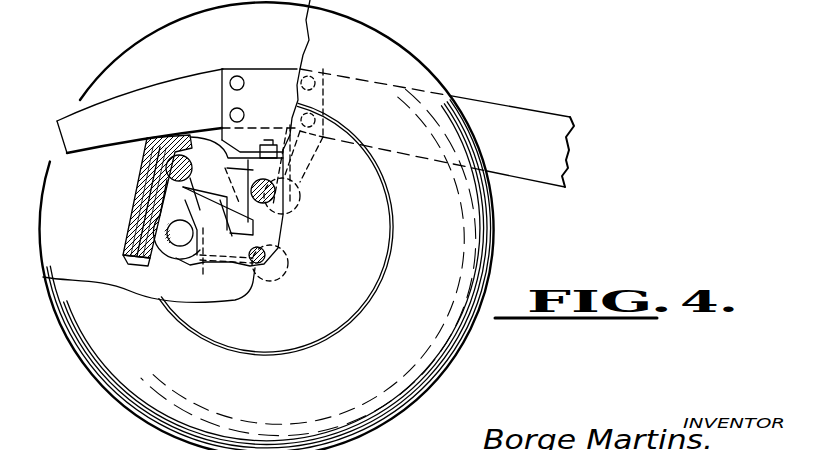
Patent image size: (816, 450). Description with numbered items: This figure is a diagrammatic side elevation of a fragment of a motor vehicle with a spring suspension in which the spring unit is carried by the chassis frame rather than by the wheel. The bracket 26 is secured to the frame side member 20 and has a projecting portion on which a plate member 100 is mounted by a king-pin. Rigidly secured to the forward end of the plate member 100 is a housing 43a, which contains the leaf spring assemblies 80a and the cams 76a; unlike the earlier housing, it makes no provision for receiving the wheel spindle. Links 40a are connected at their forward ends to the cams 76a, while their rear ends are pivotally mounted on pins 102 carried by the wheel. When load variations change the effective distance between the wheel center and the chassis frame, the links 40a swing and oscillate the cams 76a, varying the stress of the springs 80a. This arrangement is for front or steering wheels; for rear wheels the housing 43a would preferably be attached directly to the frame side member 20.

The frame side member 20 is at (503, 112).
The bracket 26 is at (230, 97).
The plate member 100 is at (242, 150).
The pins 102 is at (277, 193).
The links 40a is at (183, 174).
The cams 76a is at (150, 173).
The leaf spring assemblies 80a is at (140, 218).
The housing 43a is at (138, 263).